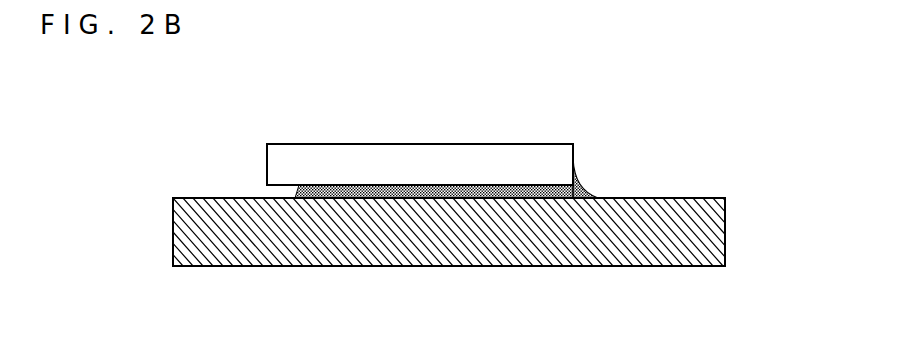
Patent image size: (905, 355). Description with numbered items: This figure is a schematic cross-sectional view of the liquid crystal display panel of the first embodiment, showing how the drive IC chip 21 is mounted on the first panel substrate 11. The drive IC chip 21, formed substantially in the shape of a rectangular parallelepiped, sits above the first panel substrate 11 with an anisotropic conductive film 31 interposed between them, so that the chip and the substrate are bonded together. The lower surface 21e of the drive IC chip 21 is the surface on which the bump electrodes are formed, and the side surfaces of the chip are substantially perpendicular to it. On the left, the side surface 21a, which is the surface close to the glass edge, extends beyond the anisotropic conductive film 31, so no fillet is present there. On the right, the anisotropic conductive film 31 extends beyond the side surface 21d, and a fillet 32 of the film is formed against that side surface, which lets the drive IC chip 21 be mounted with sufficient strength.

The first panel substrate 11 is at (583, 257).
The drive IC chip 21 is at (408, 144).
The side surface 21a is at (267, 165).
The side surface 21d is at (573, 150).
The surface 21e is at (430, 186).
The anisotropic conductive film 31 is at (588, 190).
The fillet 32 is at (578, 175).